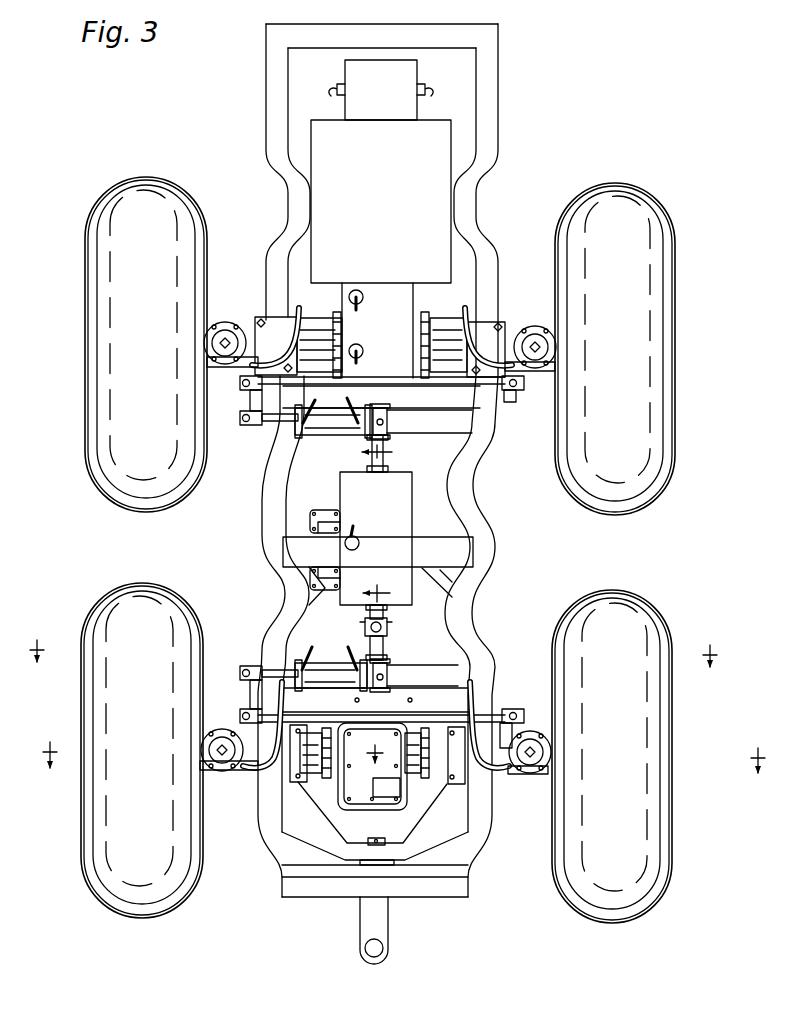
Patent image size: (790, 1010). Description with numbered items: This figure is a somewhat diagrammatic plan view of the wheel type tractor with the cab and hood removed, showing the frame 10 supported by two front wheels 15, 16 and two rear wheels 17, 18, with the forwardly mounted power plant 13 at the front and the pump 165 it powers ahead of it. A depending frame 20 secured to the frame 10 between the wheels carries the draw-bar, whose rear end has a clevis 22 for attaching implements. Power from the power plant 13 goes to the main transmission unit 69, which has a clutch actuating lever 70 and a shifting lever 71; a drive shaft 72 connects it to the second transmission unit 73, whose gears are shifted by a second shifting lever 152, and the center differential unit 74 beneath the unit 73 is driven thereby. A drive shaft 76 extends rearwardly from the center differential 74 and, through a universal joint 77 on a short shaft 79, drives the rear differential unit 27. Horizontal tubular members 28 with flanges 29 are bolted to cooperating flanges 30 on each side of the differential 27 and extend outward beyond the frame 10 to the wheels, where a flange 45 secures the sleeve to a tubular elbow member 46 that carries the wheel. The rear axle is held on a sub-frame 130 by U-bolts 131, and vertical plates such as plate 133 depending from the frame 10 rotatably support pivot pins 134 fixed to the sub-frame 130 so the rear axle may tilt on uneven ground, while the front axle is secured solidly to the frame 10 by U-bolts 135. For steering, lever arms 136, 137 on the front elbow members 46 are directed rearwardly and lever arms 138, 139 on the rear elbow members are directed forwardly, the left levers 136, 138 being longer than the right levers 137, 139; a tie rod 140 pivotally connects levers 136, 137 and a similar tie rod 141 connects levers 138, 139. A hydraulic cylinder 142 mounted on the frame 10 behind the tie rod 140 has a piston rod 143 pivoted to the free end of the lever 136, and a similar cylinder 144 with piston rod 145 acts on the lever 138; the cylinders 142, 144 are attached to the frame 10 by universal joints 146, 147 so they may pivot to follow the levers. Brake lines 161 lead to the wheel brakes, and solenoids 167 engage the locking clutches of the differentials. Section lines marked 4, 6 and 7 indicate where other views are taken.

The frame 10 is at (494, 544).
The power plant 13 is at (396, 189).
The front wheel 15 is at (134, 352).
The front wheel 16 is at (604, 352).
The rear wheel 17 is at (126, 757).
The rear wheel 18 is at (601, 759).
The depending frame 20 is at (297, 543).
The clevis 22 is at (381, 935).
The rear differential unit 27 is at (355, 808).
The horizontal tubular member 28 is at (322, 330).
The flange 29 is at (338, 312).
The cooperating flange 30 is at (315, 403).
The flange 45 is at (235, 322).
The tubular elbow member 46 is at (212, 340).
The main transmission unit 69 is at (380, 329).
The lever 70 is at (364, 301).
The shifting lever 71 is at (364, 354).
The drive shaft 72 is at (386, 465).
The second transmission unit 73 is at (369, 511).
The center differential unit 74 is at (328, 576).
The drive shaft 76 is at (397, 610).
The universal joint 77 is at (389, 628).
The short shaft 79 is at (389, 648).
The sub-frame 130 is at (322, 832).
The U-bolt 131 is at (455, 730).
The vertical plate 133 is at (365, 866).
The pivot pin 134 is at (381, 838).
The U-bolt 135 is at (261, 320).
The lever arm 136 is at (250, 400).
The lever arm 137 is at (520, 388).
The lever arm 138 is at (250, 697).
The lever arm 139 is at (514, 738).
The tie rod 140 is at (397, 385).
The tie rod 141 is at (386, 714).
The hydraulic cylinder 142 is at (342, 430).
The piston rod 143 is at (272, 421).
The hydraulic cylinder 144 is at (333, 663).
The piston rod 145 is at (270, 668).
The universal joint 146 is at (384, 422).
The universal joint 147 is at (389, 676).
The second shifting lever 152 is at (356, 540).
The brake line 161 is at (294, 308).
The pump 165 is at (400, 95).
The solenoid 167 is at (330, 525).
The section line 4 is at (373, 645).
The section line 6 is at (383, 524).
The section line 7 is at (404, 749).